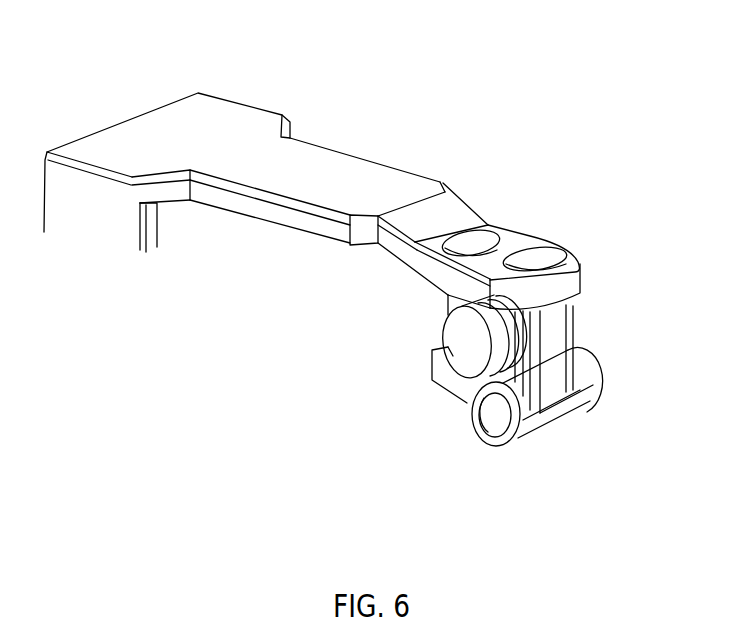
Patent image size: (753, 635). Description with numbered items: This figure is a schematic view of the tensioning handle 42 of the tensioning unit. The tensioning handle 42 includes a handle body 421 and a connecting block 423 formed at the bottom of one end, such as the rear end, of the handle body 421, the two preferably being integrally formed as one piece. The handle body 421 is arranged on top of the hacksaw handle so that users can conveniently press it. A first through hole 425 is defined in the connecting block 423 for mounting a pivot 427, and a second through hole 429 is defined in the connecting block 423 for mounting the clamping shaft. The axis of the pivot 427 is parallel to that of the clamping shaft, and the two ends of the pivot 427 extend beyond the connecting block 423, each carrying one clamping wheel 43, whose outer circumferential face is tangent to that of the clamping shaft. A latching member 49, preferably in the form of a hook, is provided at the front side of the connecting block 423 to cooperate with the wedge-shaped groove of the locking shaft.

The tensioning handle 42 is at (406, 158).
The handle body 421 is at (298, 178).
The connecting block 423 is at (560, 348).
The first through hole 425 is at (565, 405).
The pivot 427 is at (514, 316).
The second through hole 429 is at (505, 405).
The clamping wheel 43 is at (480, 357).
The latching member 49 is at (440, 355).